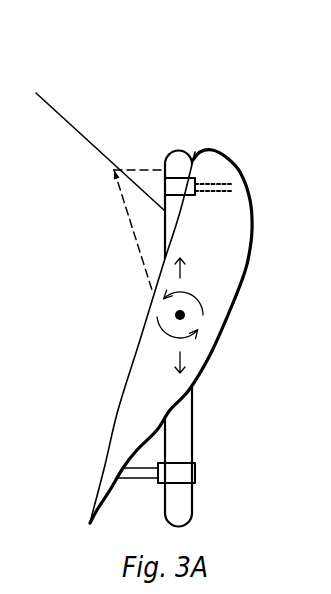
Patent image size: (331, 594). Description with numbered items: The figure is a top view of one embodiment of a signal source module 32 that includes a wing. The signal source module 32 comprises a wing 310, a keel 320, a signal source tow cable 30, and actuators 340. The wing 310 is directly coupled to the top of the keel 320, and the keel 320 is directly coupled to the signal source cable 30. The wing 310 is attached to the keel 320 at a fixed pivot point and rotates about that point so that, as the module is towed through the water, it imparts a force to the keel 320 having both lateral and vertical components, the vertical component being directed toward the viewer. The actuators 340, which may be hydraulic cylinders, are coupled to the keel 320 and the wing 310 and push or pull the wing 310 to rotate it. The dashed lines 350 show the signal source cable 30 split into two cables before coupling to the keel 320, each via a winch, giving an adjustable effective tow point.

The signal source module 32 is at (97, 58).
The signal source tow cable 30 is at (83, 137).
The wing 310 is at (112, 427).
The keel 320 is at (193, 437).
The actuators 340 is at (232, 185).
The dashed lines 350 is at (133, 170).